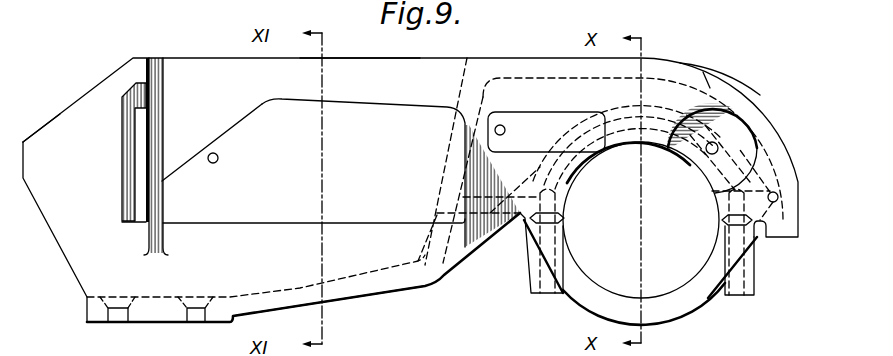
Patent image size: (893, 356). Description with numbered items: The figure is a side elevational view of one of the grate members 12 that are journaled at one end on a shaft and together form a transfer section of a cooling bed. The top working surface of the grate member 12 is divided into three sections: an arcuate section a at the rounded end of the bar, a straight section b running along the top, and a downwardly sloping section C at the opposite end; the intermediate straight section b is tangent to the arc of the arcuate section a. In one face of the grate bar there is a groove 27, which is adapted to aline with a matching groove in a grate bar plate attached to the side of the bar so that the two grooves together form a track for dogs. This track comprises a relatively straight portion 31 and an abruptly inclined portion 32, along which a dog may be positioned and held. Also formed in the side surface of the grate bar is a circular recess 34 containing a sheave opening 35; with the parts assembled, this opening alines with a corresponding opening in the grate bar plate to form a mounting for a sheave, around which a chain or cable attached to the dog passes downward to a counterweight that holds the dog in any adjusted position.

The grate member 12 is at (410, 256).
The groove 27 is at (182, 78).
The relatively straight portion 31 is at (366, 106).
The abruptly inclined portion 32 is at (233, 127).
The circular recess 34 is at (733, 120).
The sheave opening 35 is at (707, 153).
The downwardly sloping section C is at (78, 100).
The arcuate section a is at (732, 88).
The straight section b is at (378, 50).